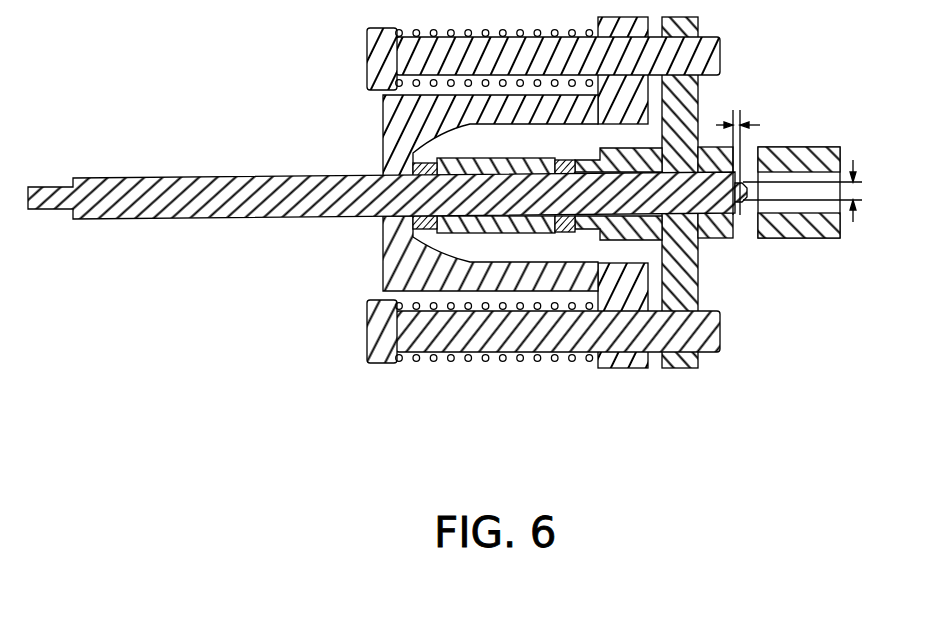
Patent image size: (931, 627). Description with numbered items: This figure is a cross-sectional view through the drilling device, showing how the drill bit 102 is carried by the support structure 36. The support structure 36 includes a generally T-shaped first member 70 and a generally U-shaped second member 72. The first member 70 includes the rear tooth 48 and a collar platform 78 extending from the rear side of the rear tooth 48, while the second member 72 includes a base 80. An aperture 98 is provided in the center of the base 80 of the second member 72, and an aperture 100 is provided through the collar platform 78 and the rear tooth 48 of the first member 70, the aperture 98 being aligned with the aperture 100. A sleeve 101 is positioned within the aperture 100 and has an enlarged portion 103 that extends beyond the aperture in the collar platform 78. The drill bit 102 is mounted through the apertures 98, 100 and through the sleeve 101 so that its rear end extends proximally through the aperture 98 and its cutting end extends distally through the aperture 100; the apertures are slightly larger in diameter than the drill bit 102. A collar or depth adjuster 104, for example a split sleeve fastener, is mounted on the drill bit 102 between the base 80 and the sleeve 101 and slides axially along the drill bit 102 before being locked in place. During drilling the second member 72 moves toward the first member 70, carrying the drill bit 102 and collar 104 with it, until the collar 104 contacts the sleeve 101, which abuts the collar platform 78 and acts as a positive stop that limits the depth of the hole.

The support structure 36 is at (529, 381).
The rear tooth 48 is at (714, 150).
The first member 70 is at (693, 86).
The second member 72 is at (384, 105).
The collar platform 78 is at (600, 118).
The base 80 is at (394, 252).
The aperture 98 is at (384, 178).
The aperture 100 is at (738, 218).
The sleeve 101 is at (643, 229).
The drill bit 102 is at (230, 188).
The enlarged portion 103 is at (592, 224).
The collar or depth adjuster 104 is at (501, 229).